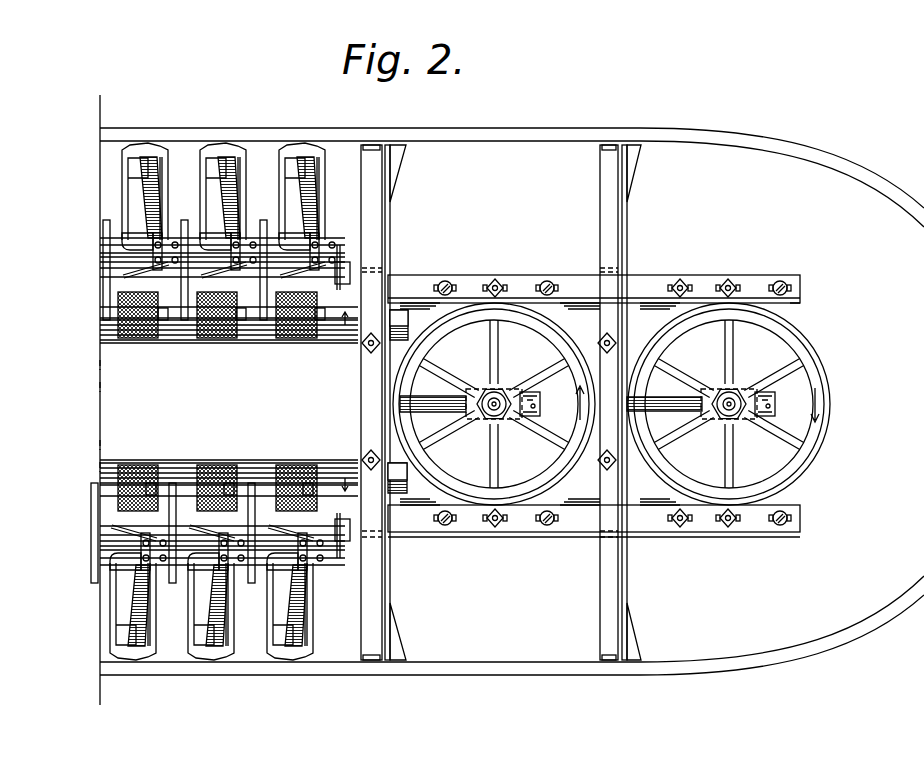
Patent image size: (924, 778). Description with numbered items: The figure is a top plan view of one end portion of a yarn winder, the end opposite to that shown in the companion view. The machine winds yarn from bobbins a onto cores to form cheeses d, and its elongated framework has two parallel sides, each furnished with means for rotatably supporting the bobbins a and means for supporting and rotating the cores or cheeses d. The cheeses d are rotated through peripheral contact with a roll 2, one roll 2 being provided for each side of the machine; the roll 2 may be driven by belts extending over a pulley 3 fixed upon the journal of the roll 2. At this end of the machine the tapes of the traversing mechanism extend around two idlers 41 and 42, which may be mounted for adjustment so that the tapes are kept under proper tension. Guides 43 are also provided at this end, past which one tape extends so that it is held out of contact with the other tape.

The bobbin a is at (158, 176).
The cheese d is at (143, 462).
The roll 2 is at (252, 460).
The pulley 3 is at (397, 312).
The idler 41 is at (795, 378).
The idler 42 is at (512, 304).
The guide 43 is at (636, 305).